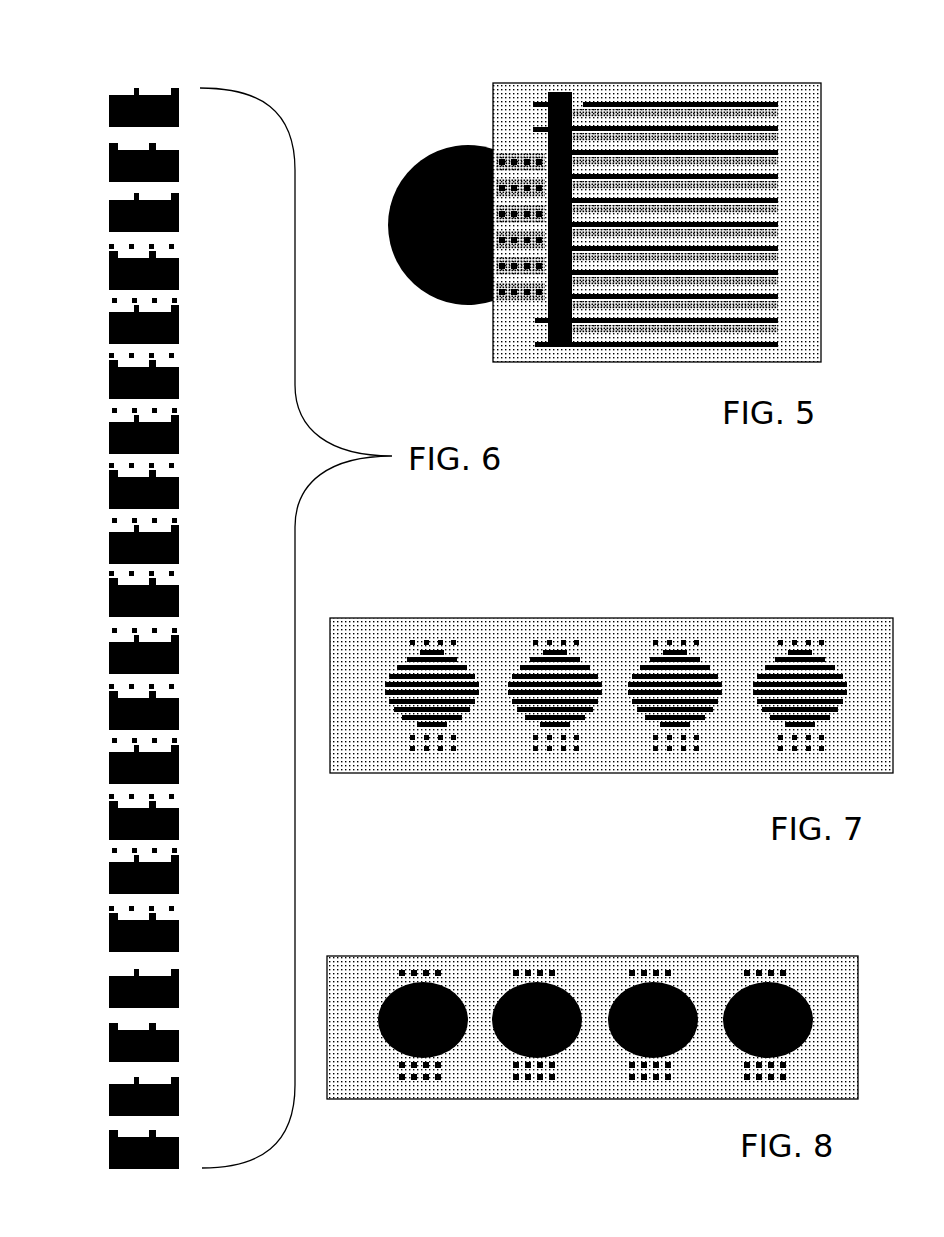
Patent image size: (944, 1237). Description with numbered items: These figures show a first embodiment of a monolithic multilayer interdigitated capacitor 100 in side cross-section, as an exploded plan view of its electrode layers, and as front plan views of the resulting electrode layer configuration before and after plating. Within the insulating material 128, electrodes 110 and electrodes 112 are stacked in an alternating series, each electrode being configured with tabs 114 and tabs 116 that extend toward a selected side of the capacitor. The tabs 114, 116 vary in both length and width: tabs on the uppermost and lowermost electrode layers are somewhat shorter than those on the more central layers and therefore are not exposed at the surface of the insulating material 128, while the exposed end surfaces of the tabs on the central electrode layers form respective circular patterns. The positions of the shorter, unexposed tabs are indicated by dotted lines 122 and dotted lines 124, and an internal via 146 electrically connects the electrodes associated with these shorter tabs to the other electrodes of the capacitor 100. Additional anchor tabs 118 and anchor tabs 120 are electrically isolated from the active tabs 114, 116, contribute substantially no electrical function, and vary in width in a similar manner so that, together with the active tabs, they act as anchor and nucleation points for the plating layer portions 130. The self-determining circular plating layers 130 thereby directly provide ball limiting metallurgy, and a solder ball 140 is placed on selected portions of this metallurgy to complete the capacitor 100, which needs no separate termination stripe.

In FIG. 5, the multilayer interdigitated capacitor 100 is at (705, 72).
In FIG. 7, the multilayer interdigitated capacitor 100 is at (795, 605).
In FIG. 8, the multilayer interdigitated capacitor 100 is at (612, 945).
In FIG. 5, the electrode 110 is at (780, 160).
In FIG. 6, the electrode 110 is at (176, 127).
In FIG. 5, the electrode 112 is at (777, 175).
In FIG. 6, the electrode 112 is at (174, 607).
In FIG. 5, the electrode tab 114 is at (533, 130).
In FIG. 6, the electrode tab 114 is at (133, 197).
In FIG. 7, the electrode tab 114 is at (720, 687).
In FIG. 5, the electrode tab 116 is at (490, 242).
In FIG. 6, the electrode tab 116 is at (109, 252).
In FIG. 7, the electrode tab 116 is at (597, 680).
In FIG. 6, the anchor tab 118 is at (110, 636).
In FIG. 7, the anchor tab 118 is at (477, 697).
In FIG. 6, the anchor tab 120 is at (174, 692).
In FIG. 7, the anchor tab 120 is at (597, 707).
In FIG. 7, the dotted line 122 is at (448, 642).
In FIG. 7, the dotted line 124 is at (562, 633).
In FIG. 5, the insulating material 128 is at (805, 337).
In FIG. 5, the plating layer portion 130 is at (485, 185).
In FIG. 8, the plating layer portion 130 is at (510, 1005).
In FIG. 5, the solder ball 140 is at (395, 202).
In FIG. 5, the internal via 146 is at (560, 95).